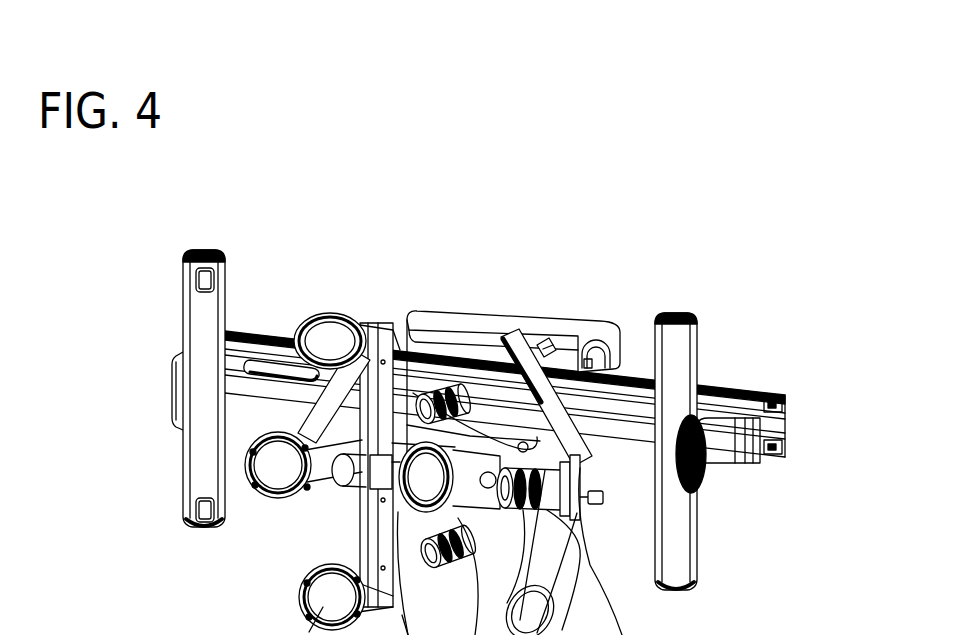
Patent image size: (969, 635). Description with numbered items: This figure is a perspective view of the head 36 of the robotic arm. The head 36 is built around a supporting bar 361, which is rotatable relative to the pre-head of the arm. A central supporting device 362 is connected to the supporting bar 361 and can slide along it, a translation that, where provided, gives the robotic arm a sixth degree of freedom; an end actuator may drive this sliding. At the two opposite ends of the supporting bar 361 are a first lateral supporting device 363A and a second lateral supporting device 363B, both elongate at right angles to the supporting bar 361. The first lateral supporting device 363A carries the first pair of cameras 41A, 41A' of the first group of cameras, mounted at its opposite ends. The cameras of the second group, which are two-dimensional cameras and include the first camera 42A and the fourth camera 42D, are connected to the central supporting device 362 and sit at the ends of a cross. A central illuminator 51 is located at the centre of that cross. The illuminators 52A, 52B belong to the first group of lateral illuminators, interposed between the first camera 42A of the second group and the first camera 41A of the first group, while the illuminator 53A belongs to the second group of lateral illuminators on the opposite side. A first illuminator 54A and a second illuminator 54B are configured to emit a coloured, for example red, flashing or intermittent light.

The head 36 is at (628, 263).
The supporting bar 361 is at (259, 367).
The supporting device 362 is at (462, 320).
The first lateral supporting device 363A is at (205, 437).
The second lateral supporting device 363B is at (678, 360).
The first camera 41A is at (134, 515).
The first camera 41A' is at (143, 274).
The first camera 42A is at (337, 473).
The fourth camera 42D is at (443, 330).
The central illuminator 51 is at (422, 476).
The illuminator 52A is at (325, 336).
The illuminator 52B is at (272, 478).
The illuminator 53A is at (528, 318).
The first illuminator 54A is at (410, 398).
The second illuminator 54B is at (485, 415).